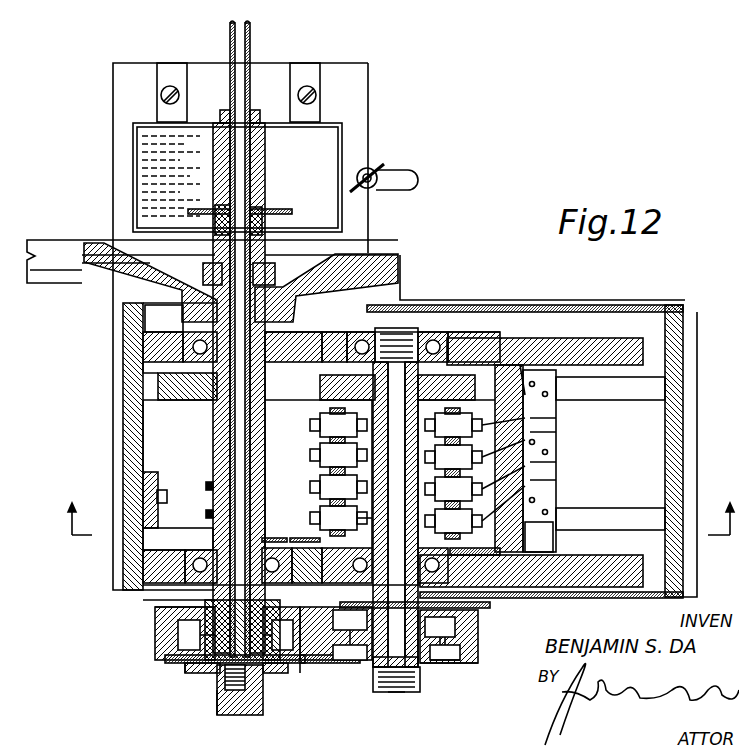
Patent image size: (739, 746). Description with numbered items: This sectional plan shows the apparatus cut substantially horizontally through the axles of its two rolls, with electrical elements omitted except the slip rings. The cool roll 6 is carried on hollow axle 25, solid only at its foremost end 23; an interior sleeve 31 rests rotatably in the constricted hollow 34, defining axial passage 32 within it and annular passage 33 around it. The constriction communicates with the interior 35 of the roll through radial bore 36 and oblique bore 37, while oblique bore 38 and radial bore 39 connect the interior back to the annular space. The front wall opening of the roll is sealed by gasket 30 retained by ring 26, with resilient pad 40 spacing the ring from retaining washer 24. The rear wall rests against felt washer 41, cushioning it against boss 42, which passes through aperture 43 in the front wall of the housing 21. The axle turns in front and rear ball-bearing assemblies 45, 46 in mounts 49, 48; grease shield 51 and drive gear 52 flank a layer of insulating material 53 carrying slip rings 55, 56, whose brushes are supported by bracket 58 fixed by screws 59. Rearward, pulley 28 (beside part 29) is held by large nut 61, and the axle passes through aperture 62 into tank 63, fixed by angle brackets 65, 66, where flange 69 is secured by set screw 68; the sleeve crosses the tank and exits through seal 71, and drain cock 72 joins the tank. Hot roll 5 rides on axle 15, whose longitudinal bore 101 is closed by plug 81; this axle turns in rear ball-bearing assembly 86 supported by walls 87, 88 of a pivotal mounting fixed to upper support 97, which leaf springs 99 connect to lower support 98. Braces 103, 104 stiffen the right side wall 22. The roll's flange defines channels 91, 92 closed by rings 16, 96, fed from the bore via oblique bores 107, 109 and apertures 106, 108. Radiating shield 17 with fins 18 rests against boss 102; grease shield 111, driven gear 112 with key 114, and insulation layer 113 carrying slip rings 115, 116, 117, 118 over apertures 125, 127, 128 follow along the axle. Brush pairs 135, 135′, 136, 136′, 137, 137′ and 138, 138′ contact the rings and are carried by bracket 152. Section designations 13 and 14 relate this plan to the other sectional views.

The hot roll 5 is at (478, 636).
The base 6 is at (155, 641).
The section line 13 is at (380, 692).
The section line 14 is at (376, 668).
The axle 15 is at (395, 693).
The ring 16 is at (450, 661).
The radiating shield 17 is at (475, 545).
The fins 18 is at (490, 606).
The bottom plate 21 is at (638, 600).
The housing 22 is at (697, 365).
The nut 23 is at (258, 709).
The retaining washer 24 is at (190, 675).
The axle 25 is at (220, 692).
The ring 26 is at (185, 660).
The pulley 28 is at (102, 242).
The plate end 29 is at (48, 240).
The gasket 30 is at (165, 663).
The interior sleeve 31 is at (251, 158).
The axial passage 32 is at (240, 22).
The annular passage 33 is at (228, 205).
The constricted hollow 34 is at (205, 673).
The interior of the roll 35 is at (315, 663).
The radial bore 36 is at (272, 673).
The oblique bore 37 is at (277, 643).
The oblique bore 38 is at (197, 643).
The radial bore 39 is at (189, 635).
The resilient pad 40 is at (328, 668).
The felt washer 41 is at (165, 619).
The boss 42 is at (282, 635).
The aperture 43 is at (165, 600).
The front ball-bearing assembly 45 is at (290, 556).
The rear ball-bearing assembly 46 is at (290, 333).
The mount 48 is at (160, 333).
The mount 49 is at (178, 539).
The grease shield 51 is at (285, 536).
The drive gear 52 is at (180, 400).
The layer of electrical insulating material 53 is at (210, 412).
The slip ring 55 is at (206, 514).
The slip ring 56 is at (206, 486).
The bracket 58 is at (158, 490).
The screws 59 is at (168, 495).
The large nut 61 is at (275, 273).
The aperture 62 is at (190, 218).
The tank 63 is at (133, 157).
The angle bracket 65 is at (165, 62).
The angle bracket 66 is at (308, 62).
The set screw 68 is at (263, 222).
The flange 69 is at (275, 209).
The seal 71 is at (256, 110).
The drain cock 72 is at (376, 170).
The plug 81 is at (396, 330).
The rear ball-bearing assembly 86 is at (442, 336).
The front wall 87 is at (625, 565).
The rear wall 88 is at (510, 345).
The front annular channel 91 is at (478, 664).
The rear annular channel 92 is at (460, 653).
The ring 96 is at (455, 626).
The upper support 97 is at (540, 365).
The lower support 98 is at (553, 537).
The leaf springs 99 is at (556, 390).
The longitudinal bore 101 is at (372, 333).
The boss 102 is at (350, 627).
The front brace 103 is at (600, 515).
The rear brace 104 is at (642, 390).
The aperture 106 is at (358, 663).
The oblique bore 107 is at (358, 660).
The aperture 108 is at (445, 665).
The oblique bore 109 is at (428, 661).
The grease shield 111 is at (349, 525).
The driven gear 112 is at (500, 360).
The layer of electrical insulation 113 is at (453, 453).
The key 114 is at (340, 340).
The slip ring 115 is at (338, 518).
The slip ring 116 is at (338, 487).
The slip ring 117 is at (338, 455).
The slip ring 118 is at (338, 425).
The aperture 125 is at (453, 520).
The aperture 127 is at (453, 485).
The aperture 128 is at (453, 422).
The brush 135 is at (309, 514).
The brush 136 is at (309, 489).
The brush 137 is at (309, 463).
The brush 138 is at (309, 436).
The brush 135' is at (537, 500).
The brush 136' is at (537, 475).
The brush 137' is at (537, 451).
The brush 138' is at (537, 429).
The U-shaped bracket 152 is at (330, 411).